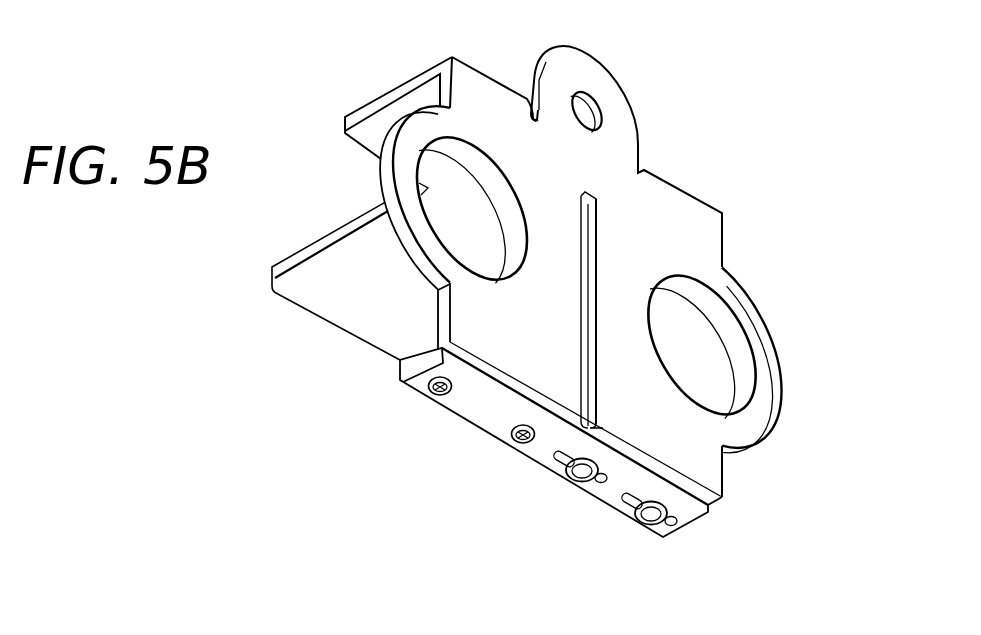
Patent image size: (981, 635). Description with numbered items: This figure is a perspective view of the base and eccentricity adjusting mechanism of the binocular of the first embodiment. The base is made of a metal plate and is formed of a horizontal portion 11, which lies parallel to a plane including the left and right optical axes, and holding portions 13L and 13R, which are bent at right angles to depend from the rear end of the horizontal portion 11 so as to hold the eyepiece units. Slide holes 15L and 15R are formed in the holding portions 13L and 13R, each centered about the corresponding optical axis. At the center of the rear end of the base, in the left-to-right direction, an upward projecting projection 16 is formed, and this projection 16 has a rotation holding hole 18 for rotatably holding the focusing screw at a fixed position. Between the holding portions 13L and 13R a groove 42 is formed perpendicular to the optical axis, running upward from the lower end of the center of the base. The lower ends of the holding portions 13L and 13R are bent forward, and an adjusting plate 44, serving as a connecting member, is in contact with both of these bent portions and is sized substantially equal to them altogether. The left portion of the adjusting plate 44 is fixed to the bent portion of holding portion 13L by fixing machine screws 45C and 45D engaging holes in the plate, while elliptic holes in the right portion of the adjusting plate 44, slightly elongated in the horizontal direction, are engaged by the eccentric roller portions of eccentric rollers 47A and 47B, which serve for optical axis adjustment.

The horizontal portion 11 is at (334, 297).
The holding portion 13L is at (407, 180).
The holding portion 13R is at (767, 404).
The slide hole 15L is at (455, 148).
The slide hole 15R is at (715, 306).
The projection 16 is at (597, 77).
The rotation holding hole 18 is at (597, 118).
The groove 42 is at (592, 260).
The adjusting plate 44 is at (543, 457).
The fixing machine screw 45C is at (520, 435).
The fixing machine screw 45D is at (435, 394).
The eccentric roller 47A is at (643, 521).
The eccentric roller 47B is at (568, 478).